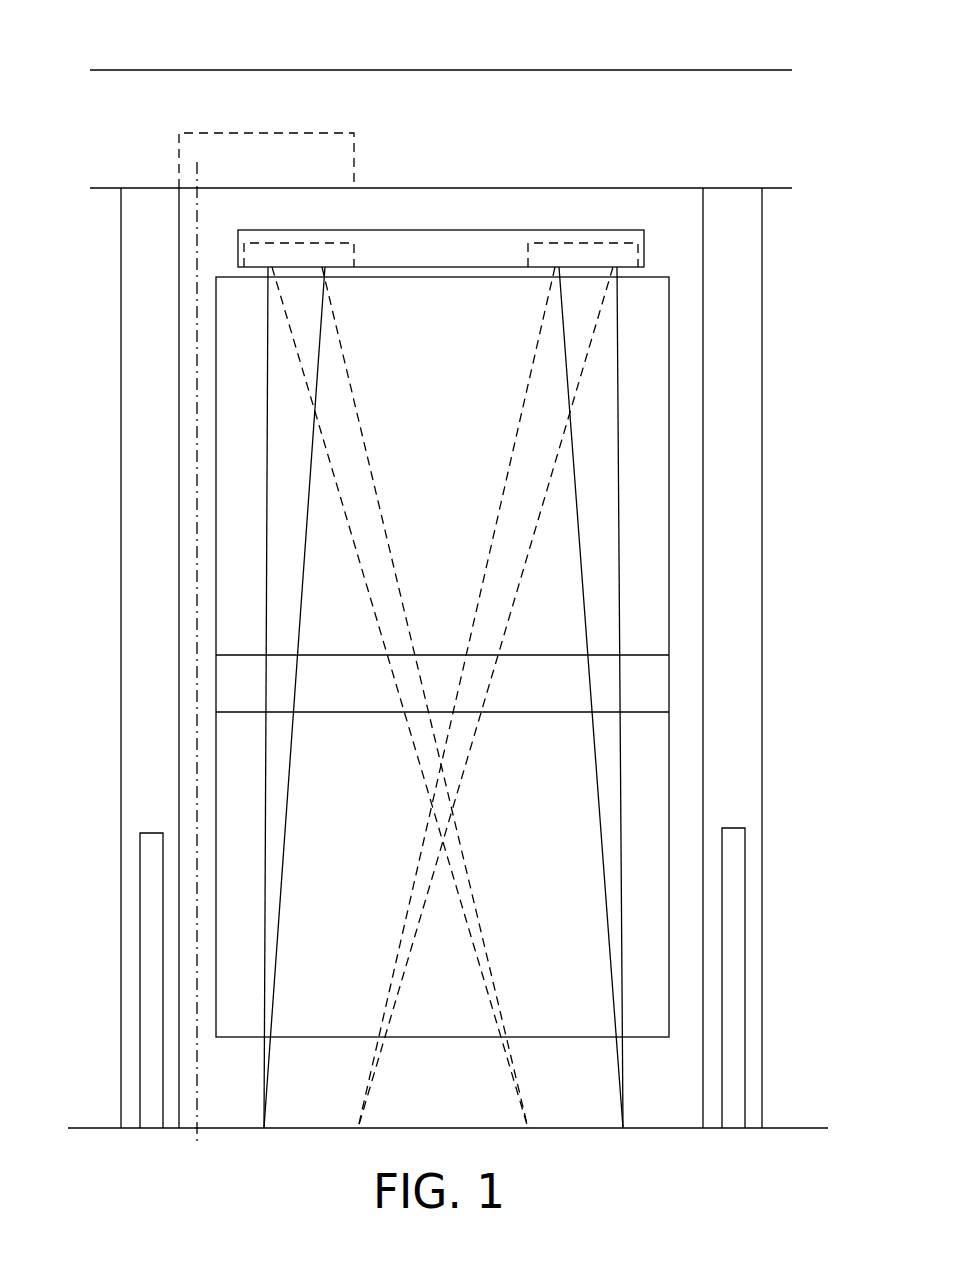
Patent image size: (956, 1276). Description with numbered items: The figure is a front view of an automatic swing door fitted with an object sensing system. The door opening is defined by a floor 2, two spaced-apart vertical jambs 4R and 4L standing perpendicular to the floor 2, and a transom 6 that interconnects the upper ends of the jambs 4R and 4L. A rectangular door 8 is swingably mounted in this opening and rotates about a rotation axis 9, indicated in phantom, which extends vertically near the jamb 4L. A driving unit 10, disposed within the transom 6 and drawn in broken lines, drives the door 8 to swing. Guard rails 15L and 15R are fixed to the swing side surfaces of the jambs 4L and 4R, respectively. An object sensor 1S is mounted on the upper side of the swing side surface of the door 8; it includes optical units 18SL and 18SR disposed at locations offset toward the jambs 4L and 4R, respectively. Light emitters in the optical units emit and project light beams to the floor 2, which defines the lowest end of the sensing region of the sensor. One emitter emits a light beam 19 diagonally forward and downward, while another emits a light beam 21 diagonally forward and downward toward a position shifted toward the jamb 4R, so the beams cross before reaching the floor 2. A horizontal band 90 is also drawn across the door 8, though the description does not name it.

The transom 6 is at (520, 95).
The driving unit 10 is at (333, 167).
The rotation axis 9 is at (200, 1082).
The jamb 4L is at (137, 700).
The jamb 4R is at (738, 580).
The floor 2 is at (802, 1123).
The object sensor 1S is at (438, 238).
The optical unit 18SL is at (318, 252).
The optical unit 18SR is at (592, 247).
The door 8 is at (652, 430).
The light beam 19 is at (275, 462).
The light beam 21 is at (350, 450).
The car cross member 90 is at (650, 677).
The guard rail 15L is at (147, 877).
The guard rail 15R is at (737, 860).